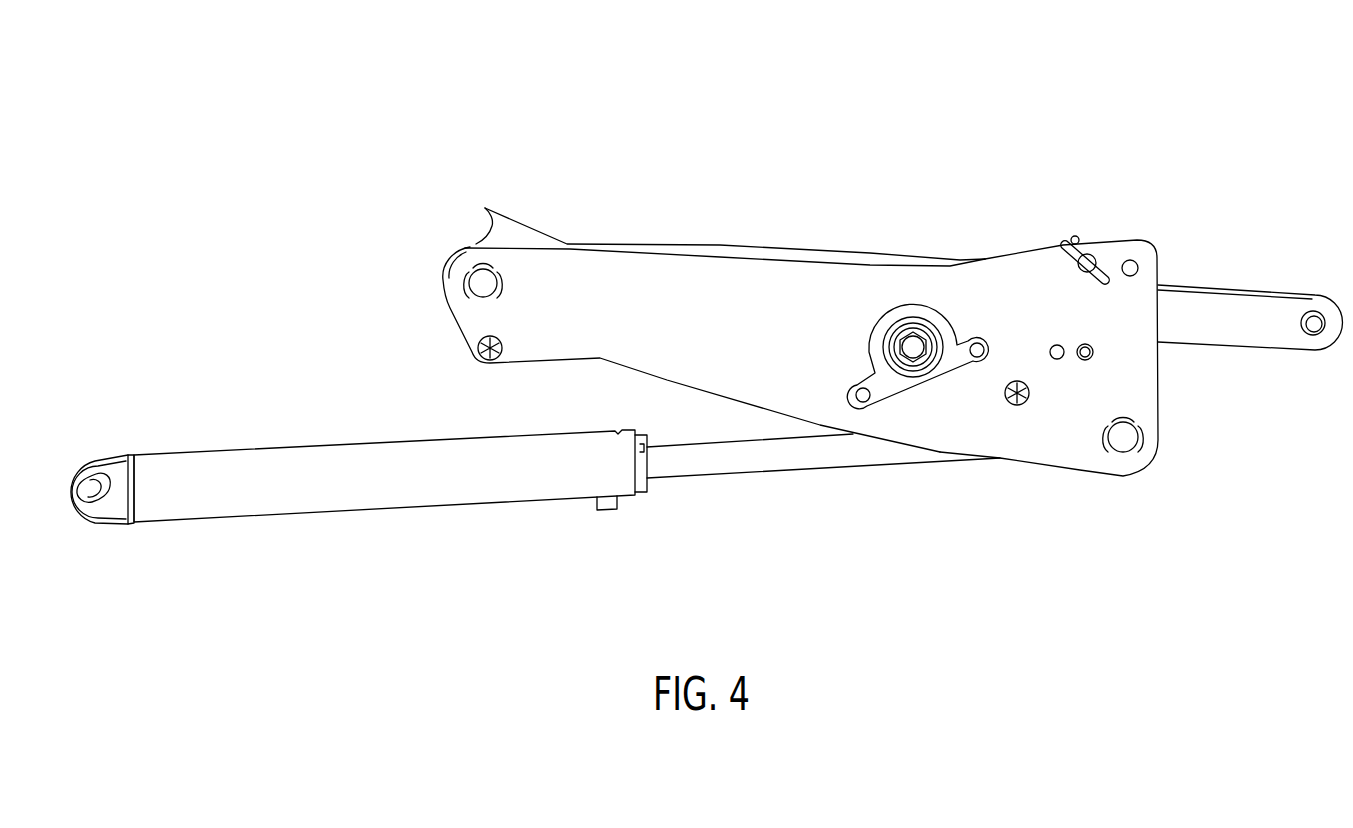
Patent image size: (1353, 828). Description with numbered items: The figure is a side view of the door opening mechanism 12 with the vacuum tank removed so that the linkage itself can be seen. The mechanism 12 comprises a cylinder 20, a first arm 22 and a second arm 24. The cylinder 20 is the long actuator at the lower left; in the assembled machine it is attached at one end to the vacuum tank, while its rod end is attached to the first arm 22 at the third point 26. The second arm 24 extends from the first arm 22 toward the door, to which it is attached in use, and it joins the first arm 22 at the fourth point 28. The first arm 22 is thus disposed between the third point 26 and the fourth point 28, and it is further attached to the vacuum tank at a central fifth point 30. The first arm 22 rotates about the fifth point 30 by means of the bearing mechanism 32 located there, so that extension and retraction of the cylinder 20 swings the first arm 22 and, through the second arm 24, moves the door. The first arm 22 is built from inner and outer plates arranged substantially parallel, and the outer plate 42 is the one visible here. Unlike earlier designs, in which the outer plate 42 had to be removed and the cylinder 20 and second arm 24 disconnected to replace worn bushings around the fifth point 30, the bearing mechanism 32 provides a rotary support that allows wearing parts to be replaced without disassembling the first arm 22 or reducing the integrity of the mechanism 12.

The door opening mechanism 12 is at (725, 122).
The cylinder 20 is at (305, 473).
The first arm 22 is at (1057, 445).
The second arm 24 is at (1227, 308).
The third point 26 is at (1313, 320).
The fourth point 28 is at (482, 283).
The fifth point 30 is at (913, 347).
The bearing mechanism 32 is at (933, 418).
The outer plate 42 is at (1142, 383).